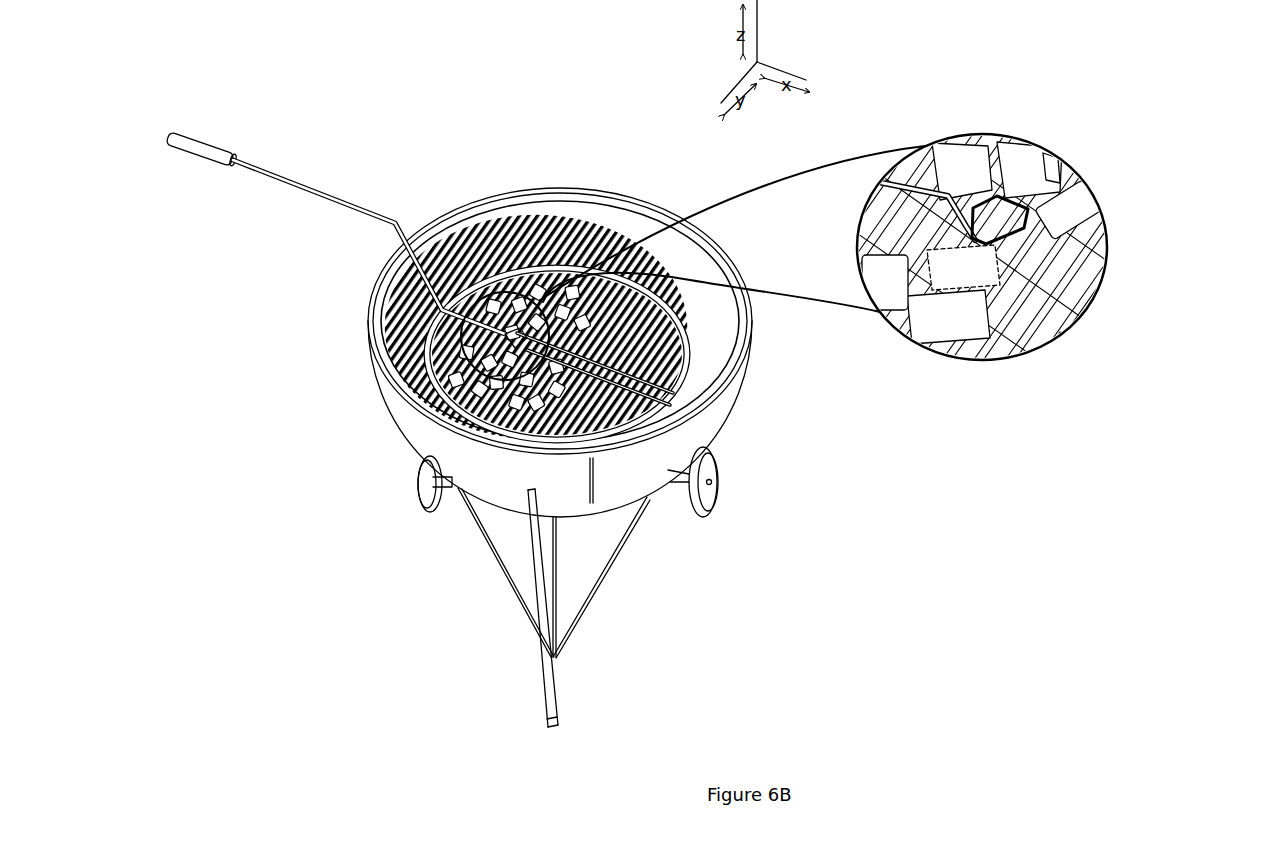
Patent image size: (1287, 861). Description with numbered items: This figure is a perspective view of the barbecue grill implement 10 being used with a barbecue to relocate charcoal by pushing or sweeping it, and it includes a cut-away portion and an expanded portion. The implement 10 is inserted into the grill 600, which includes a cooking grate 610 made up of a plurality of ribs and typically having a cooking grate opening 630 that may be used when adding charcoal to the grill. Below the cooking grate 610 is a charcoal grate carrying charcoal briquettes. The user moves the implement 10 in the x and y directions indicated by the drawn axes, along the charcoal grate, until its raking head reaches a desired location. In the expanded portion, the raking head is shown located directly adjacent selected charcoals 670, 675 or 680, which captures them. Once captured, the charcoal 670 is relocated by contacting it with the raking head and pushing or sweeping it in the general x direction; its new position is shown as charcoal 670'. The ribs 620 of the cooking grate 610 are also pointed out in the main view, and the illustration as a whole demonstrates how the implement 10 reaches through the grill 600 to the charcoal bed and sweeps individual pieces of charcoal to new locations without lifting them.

The barbecue grill implement 10 is at (279, 124).
The grill 600 is at (730, 413).
The cooking grate 610 is at (472, 217).
The ribs 620 is at (528, 217).
The cooking grate opening 630 is at (440, 248).
The charcoal 670 is at (963, 267).
The charcoal at new location 670' is at (948, 317).
The charcoal 675 is at (1040, 176).
The charcoal 680 is at (973, 176).